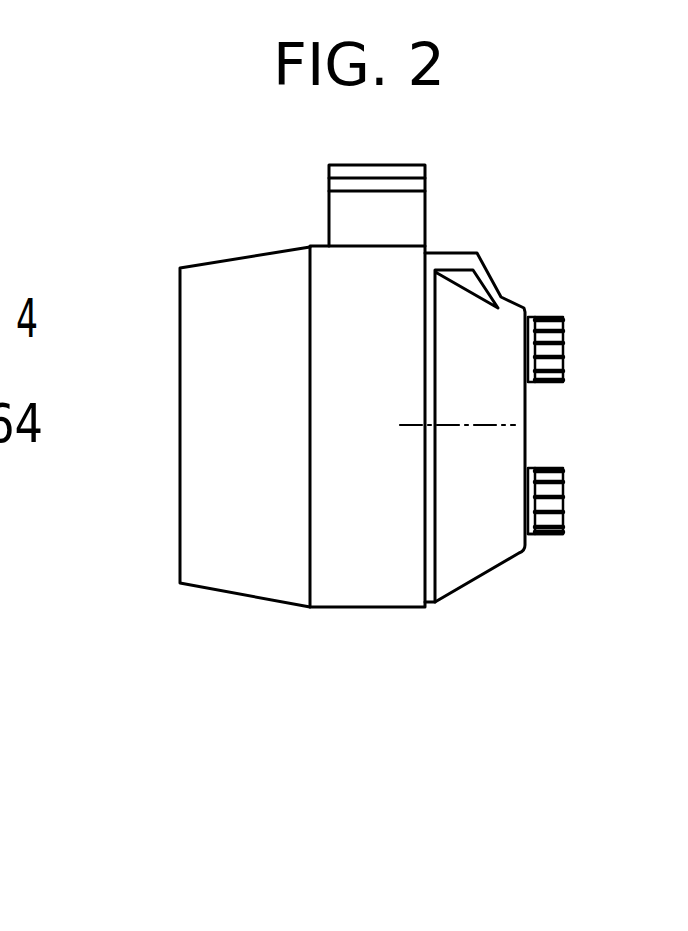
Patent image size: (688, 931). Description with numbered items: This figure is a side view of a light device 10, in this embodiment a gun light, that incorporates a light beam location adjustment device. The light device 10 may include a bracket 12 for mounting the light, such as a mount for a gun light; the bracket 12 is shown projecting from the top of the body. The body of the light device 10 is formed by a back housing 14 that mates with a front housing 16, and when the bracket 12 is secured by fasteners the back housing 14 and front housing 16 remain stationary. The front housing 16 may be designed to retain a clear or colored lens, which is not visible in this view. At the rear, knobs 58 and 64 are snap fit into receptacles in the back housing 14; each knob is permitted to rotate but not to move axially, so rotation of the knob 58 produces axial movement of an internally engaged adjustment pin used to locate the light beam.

The light device 10 is at (412, 489).
The bracket 12 is at (433, 205).
The back housing 14 is at (537, 432).
The front housing 16 is at (190, 598).
The knob 58 is at (546, 542).
The knob 64 is at (565, 305).